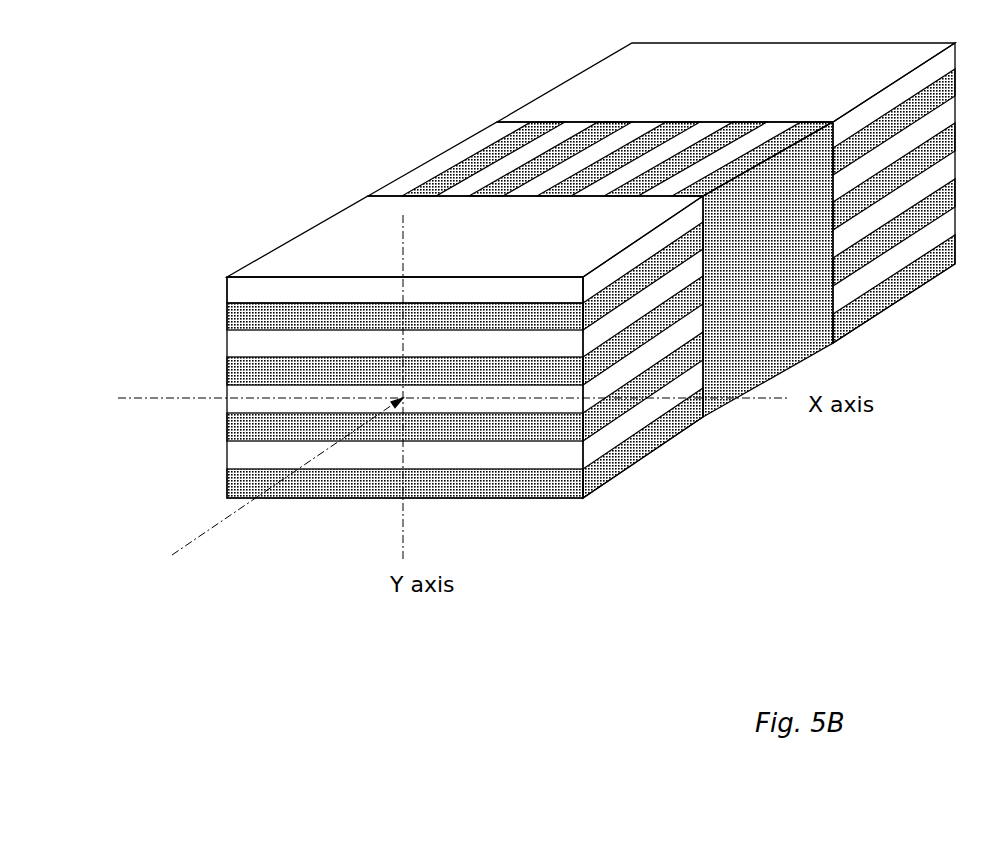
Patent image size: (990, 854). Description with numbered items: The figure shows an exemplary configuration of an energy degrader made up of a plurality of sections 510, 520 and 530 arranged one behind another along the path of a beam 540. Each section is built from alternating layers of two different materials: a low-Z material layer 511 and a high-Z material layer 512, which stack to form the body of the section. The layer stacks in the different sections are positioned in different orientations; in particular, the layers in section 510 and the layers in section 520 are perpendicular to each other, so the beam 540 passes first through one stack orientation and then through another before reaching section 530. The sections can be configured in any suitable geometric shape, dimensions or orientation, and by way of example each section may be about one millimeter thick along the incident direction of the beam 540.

The section 510 is at (418, 345).
The low-Z material layer 511 is at (359, 275).
The high-Z material layer 512 is at (358, 301).
The section 520 is at (573, 268).
The section 530 is at (716, 185).
The beam 540 is at (287, 496).